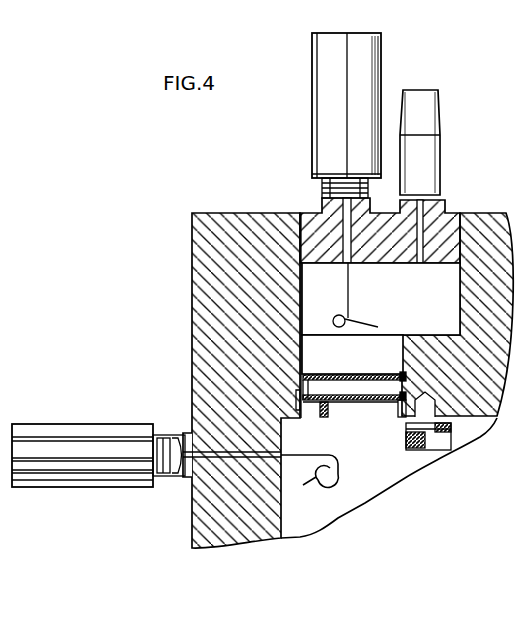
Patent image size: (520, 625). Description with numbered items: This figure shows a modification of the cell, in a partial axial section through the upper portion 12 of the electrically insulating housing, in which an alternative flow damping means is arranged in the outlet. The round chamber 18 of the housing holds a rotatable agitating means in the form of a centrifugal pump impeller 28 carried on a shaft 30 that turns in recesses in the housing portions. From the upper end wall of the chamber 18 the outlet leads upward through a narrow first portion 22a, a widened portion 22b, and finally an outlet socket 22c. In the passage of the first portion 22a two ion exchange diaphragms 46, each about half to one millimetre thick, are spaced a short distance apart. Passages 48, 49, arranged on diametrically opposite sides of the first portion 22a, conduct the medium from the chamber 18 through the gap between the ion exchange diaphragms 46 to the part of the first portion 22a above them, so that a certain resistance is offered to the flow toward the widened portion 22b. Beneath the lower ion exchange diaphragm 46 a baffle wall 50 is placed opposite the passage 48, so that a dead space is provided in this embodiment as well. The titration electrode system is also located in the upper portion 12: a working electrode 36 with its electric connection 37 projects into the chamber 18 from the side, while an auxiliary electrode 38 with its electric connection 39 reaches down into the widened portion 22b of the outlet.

The upper portion 12 is at (198, 237).
The chamber 18 is at (355, 492).
The first portion 22a is at (352, 354).
The widened portion 22b is at (381, 299).
The outlet socket 22c is at (438, 122).
The centrifugal pump impeller 28 is at (409, 449).
The shaft 30 is at (446, 433).
The working electrode 36 is at (309, 481).
The electric connection 37 is at (112, 418).
The auxiliary electrode 38 is at (349, 283).
The electric connection 39 is at (305, 83).
The ion exchange diaphragms 46 is at (320, 418).
The passage 48 is at (297, 412).
The passage 49 is at (402, 419).
The baffle wall 50 is at (326, 410).